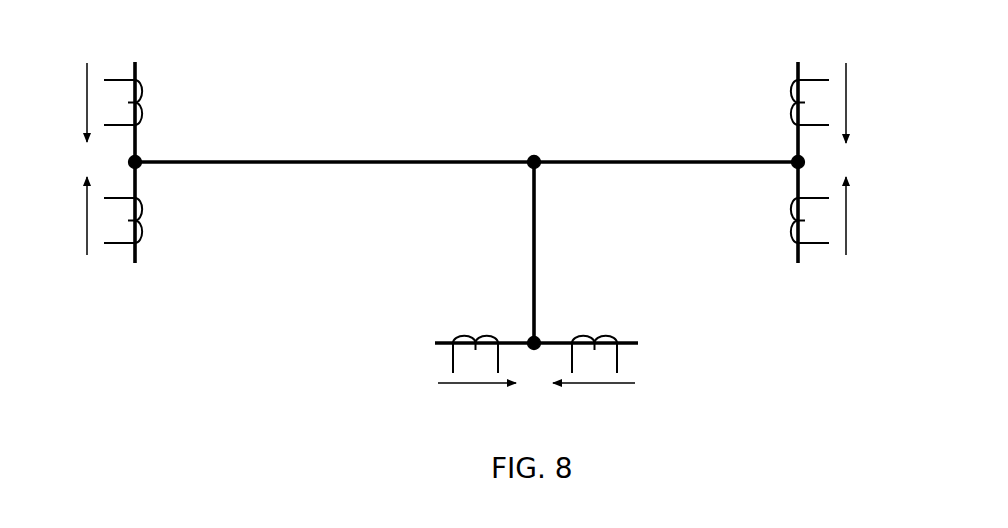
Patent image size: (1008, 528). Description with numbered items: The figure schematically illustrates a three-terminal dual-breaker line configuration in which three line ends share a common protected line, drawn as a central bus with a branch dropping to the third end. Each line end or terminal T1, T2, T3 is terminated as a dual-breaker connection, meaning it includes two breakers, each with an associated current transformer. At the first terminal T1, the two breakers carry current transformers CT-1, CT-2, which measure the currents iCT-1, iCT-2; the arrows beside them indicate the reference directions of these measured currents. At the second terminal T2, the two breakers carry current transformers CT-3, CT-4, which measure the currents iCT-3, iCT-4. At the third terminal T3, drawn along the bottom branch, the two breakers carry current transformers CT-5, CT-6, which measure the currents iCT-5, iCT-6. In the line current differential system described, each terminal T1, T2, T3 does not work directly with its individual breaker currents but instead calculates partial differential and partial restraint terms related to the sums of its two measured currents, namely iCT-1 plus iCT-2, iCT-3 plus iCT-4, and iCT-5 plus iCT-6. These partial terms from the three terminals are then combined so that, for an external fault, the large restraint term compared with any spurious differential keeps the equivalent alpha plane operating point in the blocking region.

The first terminal T1 is at (132, 143).
The second terminal T2 is at (796, 143).
The third terminal T3 is at (508, 342).
The current transformer CT-1 is at (148, 102).
The current transformer CT-2 is at (148, 220).
The current transformer CT-3 is at (779, 102).
The current transformer CT-4 is at (779, 220).
The current transformer CT-5 is at (475, 340).
The current transformer CT-6 is at (594, 340).
The current measured by CT-1 iCT-1 is at (64, 102).
The current measured by CT-2 iCT-2 is at (64, 216).
The current measured by CT-3 iCT-3 is at (870, 103).
The current measured by CT-4 iCT-4 is at (870, 216).
The current measured by CT-5 iCT-5 is at (477, 406).
The current measured by CT-6 iCT-6 is at (594, 406).